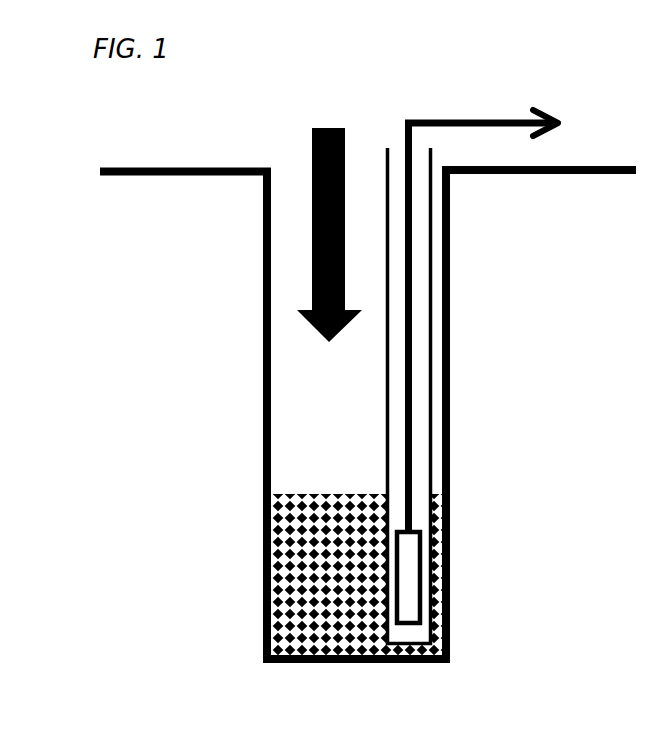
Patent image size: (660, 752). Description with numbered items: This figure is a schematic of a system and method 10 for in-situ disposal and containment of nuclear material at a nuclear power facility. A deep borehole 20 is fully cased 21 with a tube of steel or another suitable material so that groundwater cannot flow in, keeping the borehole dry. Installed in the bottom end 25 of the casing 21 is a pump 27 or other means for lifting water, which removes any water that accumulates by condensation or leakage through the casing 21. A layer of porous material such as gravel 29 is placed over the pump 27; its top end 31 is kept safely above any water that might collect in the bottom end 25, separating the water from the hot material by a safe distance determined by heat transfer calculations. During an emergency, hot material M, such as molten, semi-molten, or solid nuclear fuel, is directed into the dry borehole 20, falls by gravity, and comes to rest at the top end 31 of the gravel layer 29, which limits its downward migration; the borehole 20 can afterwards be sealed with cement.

The system and method 10 is at (176, 314).
The deep borehole 20 is at (315, 366).
The casing 21 is at (452, 383).
The bottom end 25 is at (337, 665).
The pump 27 is at (420, 575).
The layer of gravel 29 is at (309, 576).
The top end 31 is at (313, 490).
The hot material M is at (312, 147).